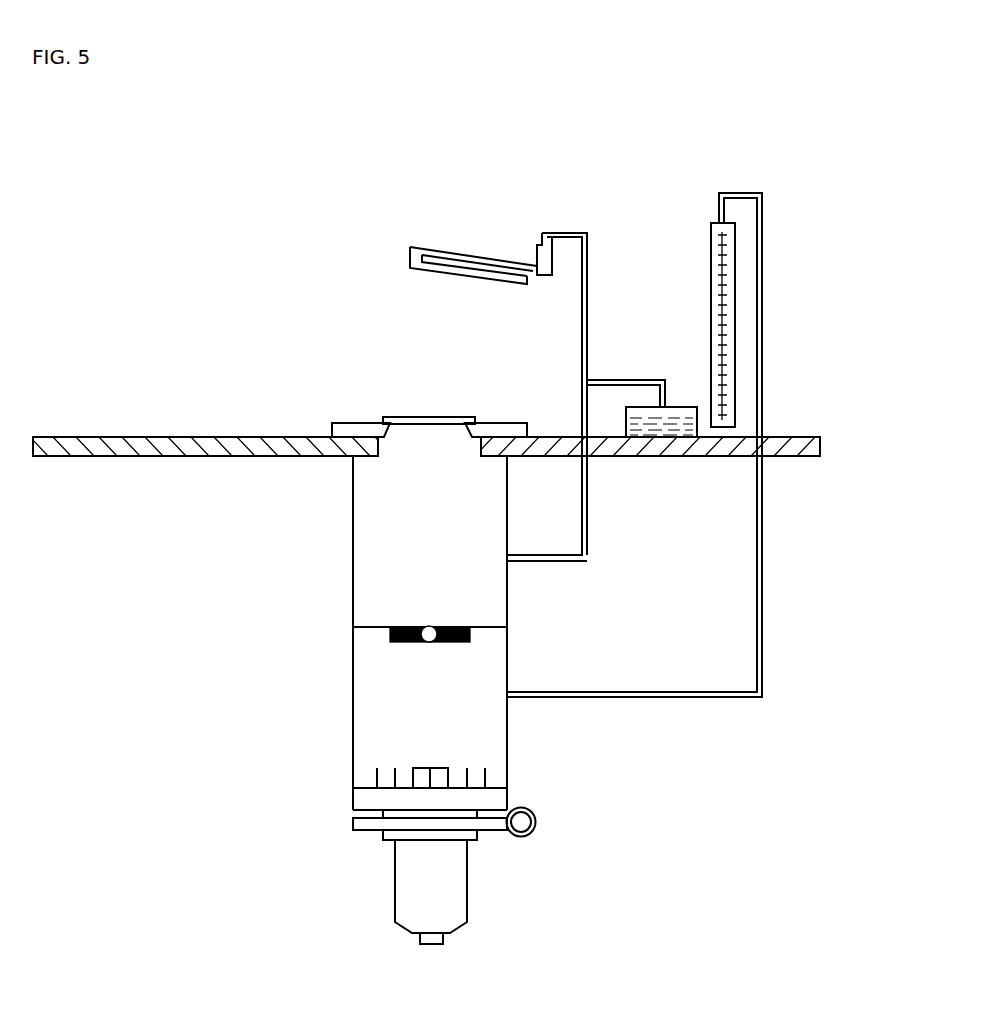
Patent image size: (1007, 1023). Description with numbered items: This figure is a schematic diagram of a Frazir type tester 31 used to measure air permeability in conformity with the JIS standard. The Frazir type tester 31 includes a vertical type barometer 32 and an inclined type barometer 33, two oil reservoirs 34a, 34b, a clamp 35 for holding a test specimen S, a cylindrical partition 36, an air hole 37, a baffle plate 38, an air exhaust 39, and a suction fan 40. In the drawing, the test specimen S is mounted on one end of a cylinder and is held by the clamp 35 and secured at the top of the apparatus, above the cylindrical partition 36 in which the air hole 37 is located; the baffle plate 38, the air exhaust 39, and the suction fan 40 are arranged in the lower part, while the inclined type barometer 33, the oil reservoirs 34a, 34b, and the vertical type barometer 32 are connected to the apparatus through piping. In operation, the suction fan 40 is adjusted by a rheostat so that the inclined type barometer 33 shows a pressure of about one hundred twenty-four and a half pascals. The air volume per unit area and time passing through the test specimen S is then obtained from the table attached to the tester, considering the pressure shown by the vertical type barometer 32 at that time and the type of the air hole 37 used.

The Frazir type tester 31 is at (733, 138).
The vertical type barometer 32 is at (712, 223).
The inclined type barometer 33 is at (427, 247).
The oil reservoir 34a is at (540, 245).
The oil reservoir 34b is at (682, 407).
The clamp 35 is at (415, 416).
The test specimen S is at (353, 423).
The cylindrical partition 36 is at (377, 628).
The air hole 37 is at (433, 638).
The baffle plate 38 is at (485, 775).
The air exhaust 39 is at (531, 809).
The suction fan 40 is at (360, 829).